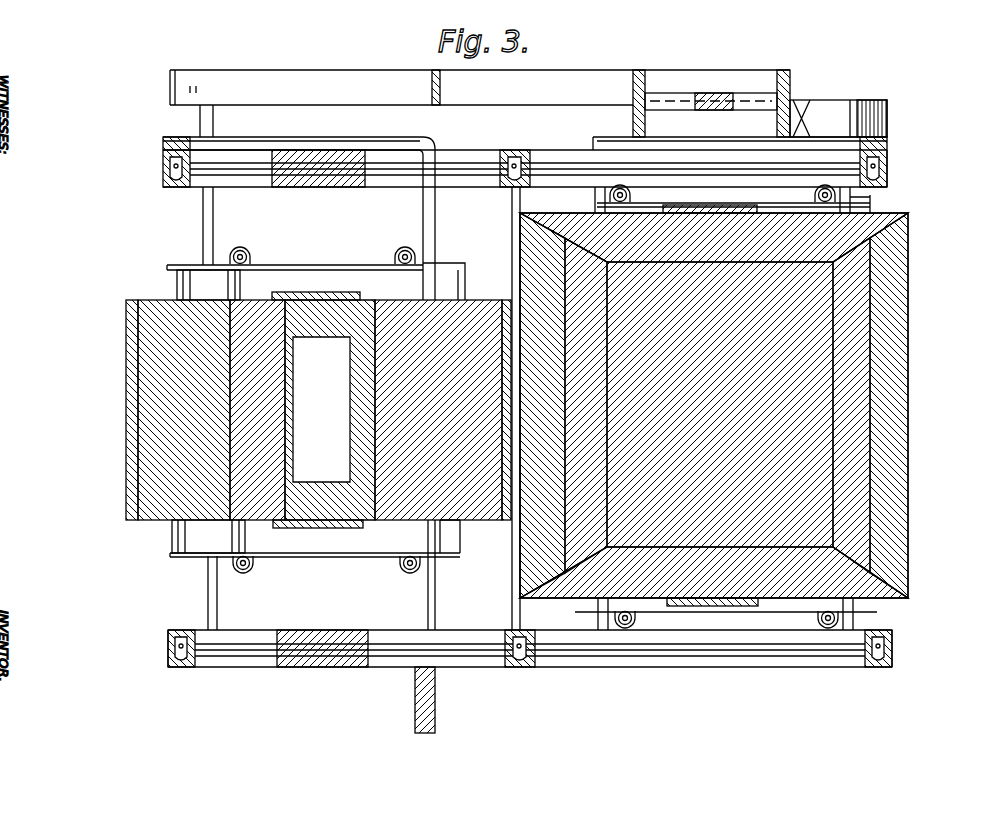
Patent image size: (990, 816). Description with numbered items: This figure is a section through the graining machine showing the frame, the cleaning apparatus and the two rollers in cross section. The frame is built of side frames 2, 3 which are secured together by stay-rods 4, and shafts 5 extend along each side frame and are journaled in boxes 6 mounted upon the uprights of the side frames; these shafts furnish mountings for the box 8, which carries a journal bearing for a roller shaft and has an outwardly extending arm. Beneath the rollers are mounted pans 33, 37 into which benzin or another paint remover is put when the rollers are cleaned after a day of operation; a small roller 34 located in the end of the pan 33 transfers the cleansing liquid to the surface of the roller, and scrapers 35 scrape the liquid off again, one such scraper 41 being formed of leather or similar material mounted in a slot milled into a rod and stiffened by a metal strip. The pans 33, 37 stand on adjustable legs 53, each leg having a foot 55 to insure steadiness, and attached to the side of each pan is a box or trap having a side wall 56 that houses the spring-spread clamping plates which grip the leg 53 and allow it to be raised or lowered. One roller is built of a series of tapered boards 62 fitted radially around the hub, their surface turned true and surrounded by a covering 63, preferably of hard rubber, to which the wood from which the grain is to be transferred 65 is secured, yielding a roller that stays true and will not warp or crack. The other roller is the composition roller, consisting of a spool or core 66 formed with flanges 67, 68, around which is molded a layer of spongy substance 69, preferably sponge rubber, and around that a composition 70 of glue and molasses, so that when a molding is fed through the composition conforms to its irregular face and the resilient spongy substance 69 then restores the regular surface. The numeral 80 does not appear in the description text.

The side frame 2 is at (885, 172).
The side frame 3 is at (892, 640).
The stay-rod 4 is at (515, 218).
The shaft 5 is at (552, 172).
The box 6 is at (168, 165).
The box 8 is at (322, 188).
The pan 33 is at (343, 268).
The small roller 34 is at (190, 537).
The scraper 35 is at (437, 580).
The pan 37 is at (872, 206).
The scraper 41 is at (440, 530).
The leg 53 is at (246, 256).
The foot 55 is at (240, 252).
The side wall 56 is at (405, 252).
The board 62 is at (195, 360).
The covering 63 is at (132, 318).
The wood from which the grain is to be transferred 65 is at (128, 376).
The spool or core 66 is at (800, 368).
The flange 67 is at (908, 218).
The flange 68 is at (865, 582).
The spongy substance 69 is at (865, 430).
The composition 70 is at (592, 148).
The tube rail 80 is at (275, 148).